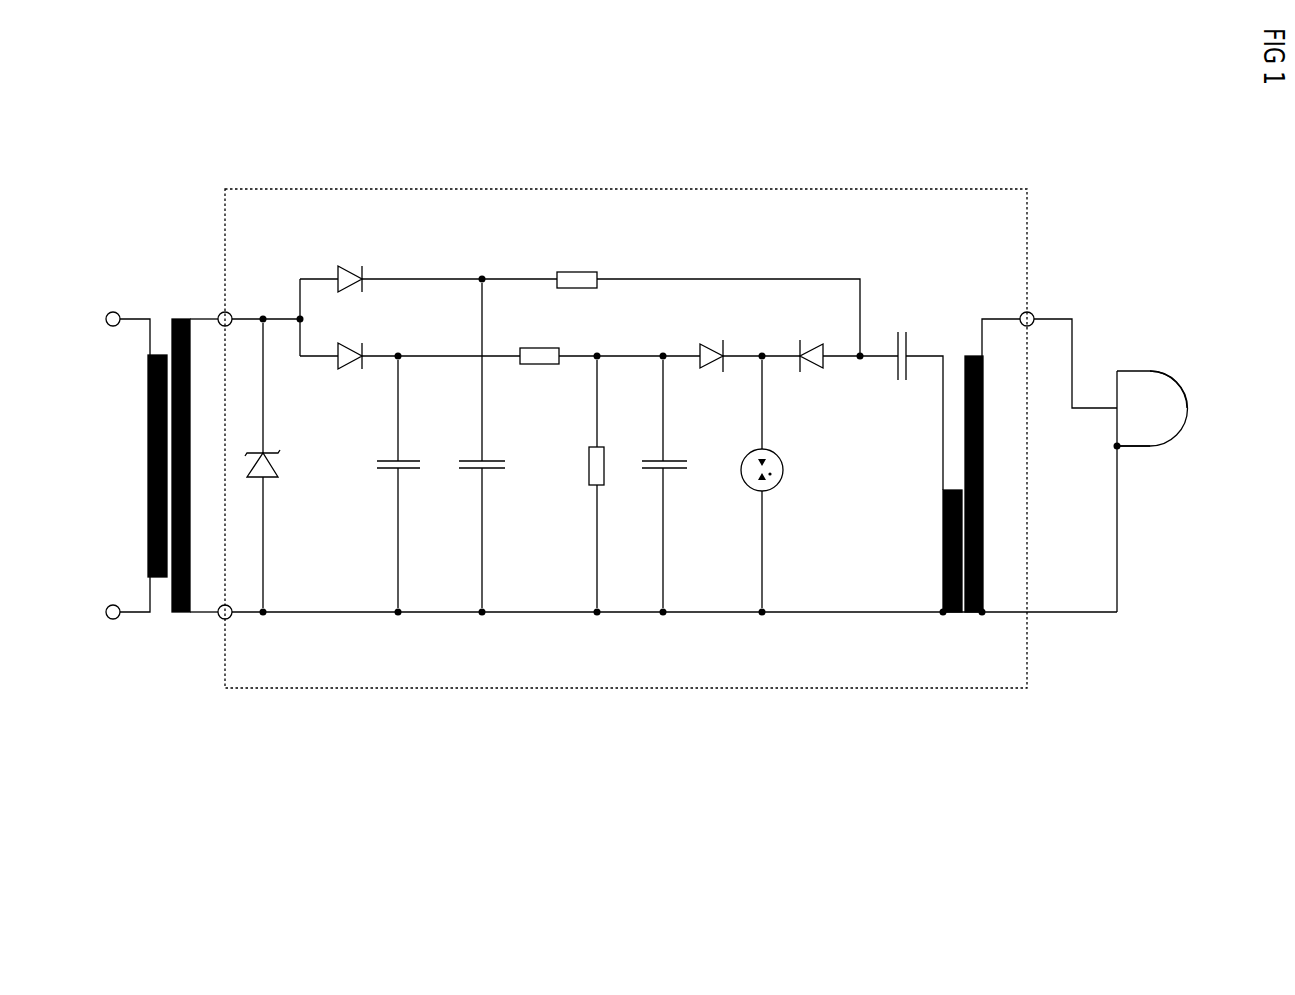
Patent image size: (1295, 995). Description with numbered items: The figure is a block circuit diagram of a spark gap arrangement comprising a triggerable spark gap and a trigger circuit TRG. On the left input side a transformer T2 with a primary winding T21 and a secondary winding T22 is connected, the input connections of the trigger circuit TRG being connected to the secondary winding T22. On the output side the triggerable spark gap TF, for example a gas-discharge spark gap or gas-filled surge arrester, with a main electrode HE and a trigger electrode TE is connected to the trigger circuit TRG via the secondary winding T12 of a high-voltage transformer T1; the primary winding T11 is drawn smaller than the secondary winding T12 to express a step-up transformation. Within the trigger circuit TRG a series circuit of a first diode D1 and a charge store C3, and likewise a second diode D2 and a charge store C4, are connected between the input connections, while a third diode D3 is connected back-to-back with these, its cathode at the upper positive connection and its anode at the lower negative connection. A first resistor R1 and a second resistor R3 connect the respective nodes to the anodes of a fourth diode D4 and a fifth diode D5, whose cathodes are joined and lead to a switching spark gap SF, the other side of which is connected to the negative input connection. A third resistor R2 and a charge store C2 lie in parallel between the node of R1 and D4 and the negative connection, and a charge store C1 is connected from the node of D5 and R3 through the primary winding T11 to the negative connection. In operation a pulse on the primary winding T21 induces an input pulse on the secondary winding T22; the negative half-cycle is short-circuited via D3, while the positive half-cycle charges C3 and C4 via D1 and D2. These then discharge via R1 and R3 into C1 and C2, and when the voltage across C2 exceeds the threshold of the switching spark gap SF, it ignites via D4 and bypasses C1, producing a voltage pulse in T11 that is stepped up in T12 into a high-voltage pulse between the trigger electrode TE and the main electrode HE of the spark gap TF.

The transformer T2 is at (157, 457).
The primary winding T21 is at (155, 352).
The secondary winding T22 is at (180, 319).
The trigger circuit TRG is at (667, 488).
The first diode D1 is at (343, 367).
The second diode D2 is at (358, 290).
The third diode D3 is at (278, 477).
The fourth diode D4 is at (702, 370).
The fifth diode D5 is at (820, 370).
The charge store C1 is at (898, 380).
The charge store C2 is at (646, 470).
The charge store C3 is at (385, 470).
The charge store C4 is at (466, 470).
The first resistor R1 is at (540, 364).
The third resistor R2 is at (589, 465).
The second resistor R3 is at (580, 272).
The switching spark gap SF is at (748, 486).
The high-voltage transformer T1 is at (964, 537).
The primary winding T11 is at (943, 545).
The secondary winding T12 is at (962, 630).
The triggerable spark gap TF is at (1162, 351).
The trigger electrode TE is at (1185, 408).
The main electrode HE is at (1153, 447).